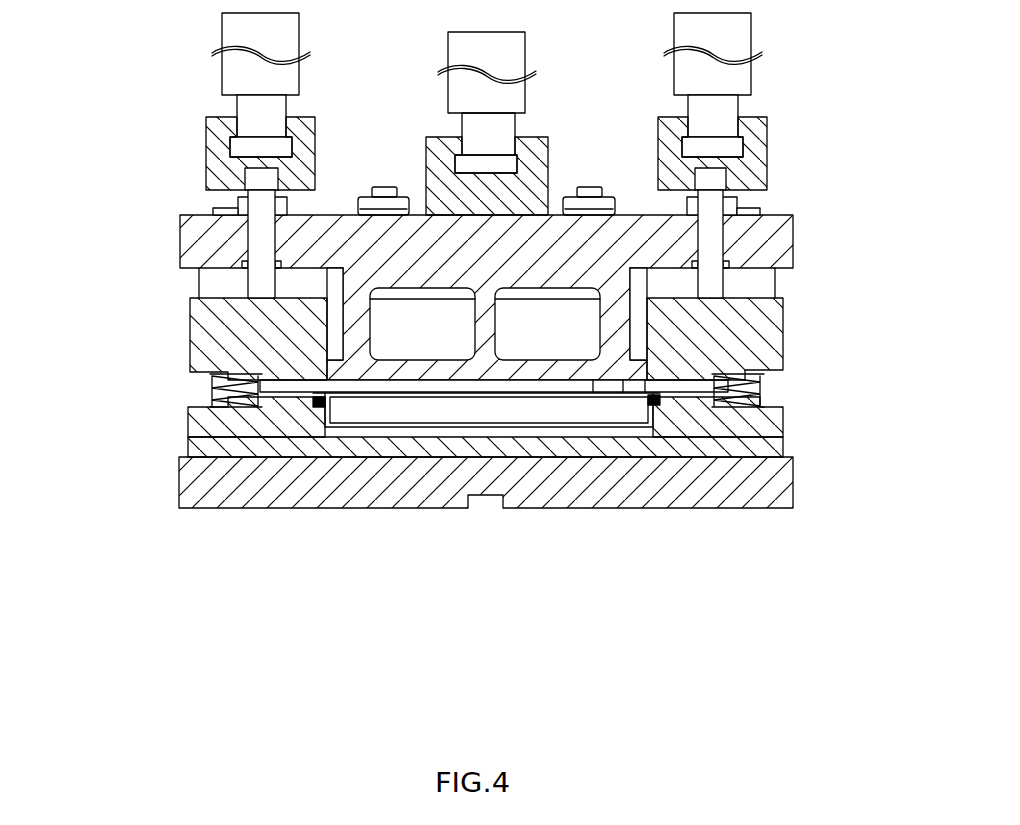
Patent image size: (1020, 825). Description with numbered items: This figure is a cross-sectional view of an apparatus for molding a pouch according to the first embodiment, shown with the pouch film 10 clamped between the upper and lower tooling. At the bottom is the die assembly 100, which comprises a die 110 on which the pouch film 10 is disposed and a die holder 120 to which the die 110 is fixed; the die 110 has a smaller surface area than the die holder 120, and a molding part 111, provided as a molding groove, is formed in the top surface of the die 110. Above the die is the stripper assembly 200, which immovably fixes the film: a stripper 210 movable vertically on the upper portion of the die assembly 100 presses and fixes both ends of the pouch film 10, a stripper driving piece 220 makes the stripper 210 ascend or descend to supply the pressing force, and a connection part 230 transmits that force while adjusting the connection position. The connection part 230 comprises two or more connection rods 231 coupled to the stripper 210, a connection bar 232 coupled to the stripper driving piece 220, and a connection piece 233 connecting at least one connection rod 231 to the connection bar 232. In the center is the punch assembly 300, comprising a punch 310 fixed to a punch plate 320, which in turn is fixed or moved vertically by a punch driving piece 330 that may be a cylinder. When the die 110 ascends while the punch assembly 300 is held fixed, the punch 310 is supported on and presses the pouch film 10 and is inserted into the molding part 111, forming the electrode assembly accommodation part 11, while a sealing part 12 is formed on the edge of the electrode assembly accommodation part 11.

The pouch film 10 is at (491, 496).
The electrode assembly accommodation part 11 is at (572, 427).
The sealing part 12 is at (653, 397).
The die assembly 100 is at (552, 475).
The die 110 is at (727, 423).
The molding part 111 is at (397, 432).
The die holder 120 is at (773, 485).
The stripper assembly 200 is at (562, 350).
The stripper 210 is at (783, 331).
The stripper driving piece 220 is at (751, 75).
The connection part 230 is at (570, 207).
The connection rod 231 is at (539, 244).
The connection bar 232 is at (767, 142).
The connection piece 233 is at (726, 172).
The punch assembly 300 is at (405, 206).
The punch 310 is at (357, 332).
The punch plate 320 is at (180, 240).
The punch driving piece 330 is at (473, 98).